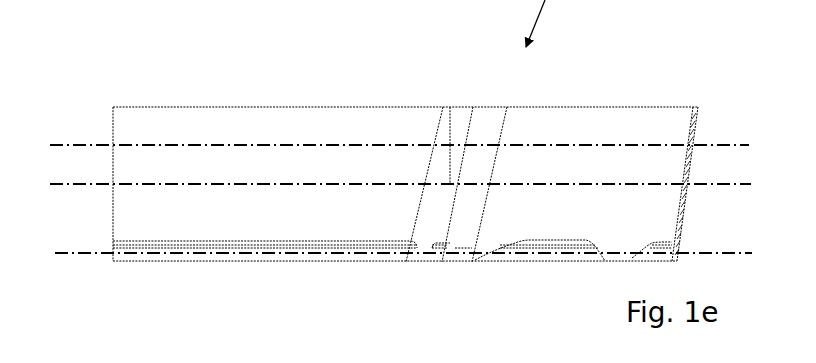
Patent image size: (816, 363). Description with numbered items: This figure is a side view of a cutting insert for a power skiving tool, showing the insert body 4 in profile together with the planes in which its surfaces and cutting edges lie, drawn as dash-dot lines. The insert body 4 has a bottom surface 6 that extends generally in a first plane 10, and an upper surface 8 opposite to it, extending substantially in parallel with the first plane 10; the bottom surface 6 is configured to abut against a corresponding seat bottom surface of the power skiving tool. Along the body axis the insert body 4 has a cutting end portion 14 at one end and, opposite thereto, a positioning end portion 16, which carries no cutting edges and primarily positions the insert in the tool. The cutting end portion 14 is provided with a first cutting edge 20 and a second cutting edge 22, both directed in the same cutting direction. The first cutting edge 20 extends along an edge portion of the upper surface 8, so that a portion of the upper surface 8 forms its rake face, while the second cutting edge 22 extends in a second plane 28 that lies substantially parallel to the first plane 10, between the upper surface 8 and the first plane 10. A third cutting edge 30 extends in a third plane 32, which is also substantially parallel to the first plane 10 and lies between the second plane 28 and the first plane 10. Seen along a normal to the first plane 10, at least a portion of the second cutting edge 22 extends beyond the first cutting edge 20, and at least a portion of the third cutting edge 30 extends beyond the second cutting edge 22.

The insert body 4 is at (364, 130).
The bottom surface 6 is at (193, 265).
The upper surface 8 is at (223, 106).
The first plane 10 is at (77, 253).
The cutting end portion 14 is at (522, 279).
The positioning end portion 16 is at (242, 279).
The first cutting edge 20 is at (589, 107).
The second cutting edge 22 is at (641, 143).
The second plane 28 is at (63, 145).
The third cutting edge 30 is at (654, 184).
The third plane 32 is at (72, 184).